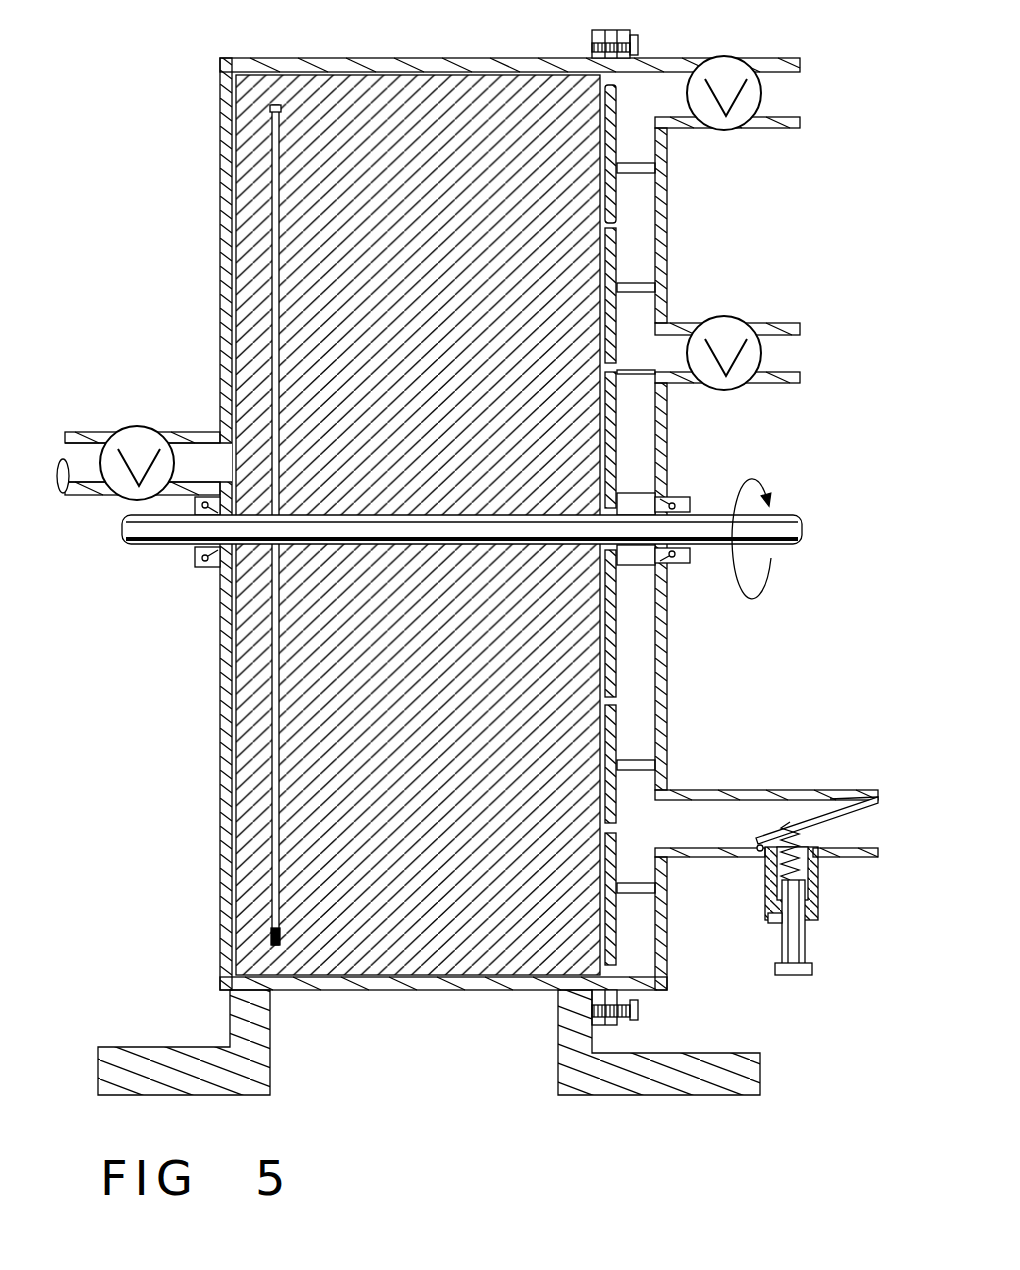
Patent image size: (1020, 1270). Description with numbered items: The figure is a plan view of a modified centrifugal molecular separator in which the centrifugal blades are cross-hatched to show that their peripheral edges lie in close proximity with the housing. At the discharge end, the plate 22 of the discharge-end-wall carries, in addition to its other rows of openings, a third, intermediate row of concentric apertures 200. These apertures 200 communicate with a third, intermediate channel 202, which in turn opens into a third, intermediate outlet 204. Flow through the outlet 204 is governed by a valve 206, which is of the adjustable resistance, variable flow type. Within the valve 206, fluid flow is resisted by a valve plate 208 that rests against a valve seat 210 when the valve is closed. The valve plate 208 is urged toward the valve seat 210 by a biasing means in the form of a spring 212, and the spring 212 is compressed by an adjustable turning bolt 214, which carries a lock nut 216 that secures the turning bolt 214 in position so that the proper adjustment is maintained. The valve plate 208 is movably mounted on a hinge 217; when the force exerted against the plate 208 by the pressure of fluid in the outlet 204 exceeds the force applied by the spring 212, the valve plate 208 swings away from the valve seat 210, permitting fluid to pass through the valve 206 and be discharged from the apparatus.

The plate 22 is at (620, 195).
The third, intermediate row of concentric apertures 200 is at (620, 825).
The third, intermediate channel 202 is at (638, 838).
The third, intermediate outlet 204 is at (747, 815).
The valve 206 is at (742, 900).
The valve plate 208 is at (830, 815).
The valve seat 210 is at (833, 797).
The spring 212 is at (787, 843).
The adjustable turning bolt 214 is at (806, 940).
The lock nut 216 is at (775, 922).
The hinge 217 is at (760, 849).